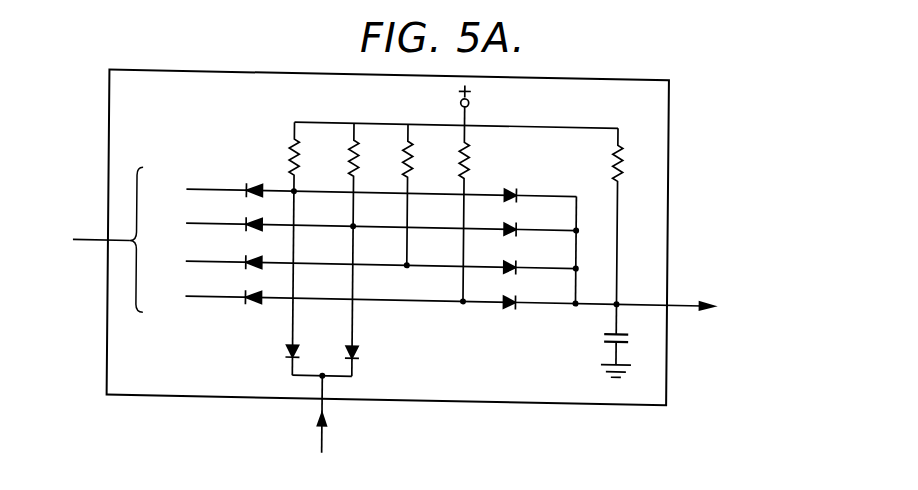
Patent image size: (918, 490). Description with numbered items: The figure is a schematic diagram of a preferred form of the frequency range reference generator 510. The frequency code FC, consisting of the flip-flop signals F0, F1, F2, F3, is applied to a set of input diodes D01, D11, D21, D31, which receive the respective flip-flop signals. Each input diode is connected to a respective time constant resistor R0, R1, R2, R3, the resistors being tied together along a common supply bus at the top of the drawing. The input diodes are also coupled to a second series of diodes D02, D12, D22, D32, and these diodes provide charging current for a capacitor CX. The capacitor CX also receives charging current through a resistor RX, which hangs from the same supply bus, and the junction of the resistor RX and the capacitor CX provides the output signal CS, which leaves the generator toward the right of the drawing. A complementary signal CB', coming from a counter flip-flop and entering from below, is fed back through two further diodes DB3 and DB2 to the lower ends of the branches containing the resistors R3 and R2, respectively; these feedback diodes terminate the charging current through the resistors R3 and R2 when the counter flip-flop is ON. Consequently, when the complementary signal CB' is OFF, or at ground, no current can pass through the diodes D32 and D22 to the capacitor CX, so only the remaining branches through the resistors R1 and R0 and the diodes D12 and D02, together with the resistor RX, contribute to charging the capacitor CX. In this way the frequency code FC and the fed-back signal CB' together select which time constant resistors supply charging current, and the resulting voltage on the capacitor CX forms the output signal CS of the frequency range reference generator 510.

The frequency range reference generator 510 is at (582, 75).
The time constant resistor R3 is at (310, 157).
The time constant resistor R2 is at (367, 175).
The time constant resistor R1 is at (422, 195).
The time constant resistor R0 is at (479, 213).
The resistor RX is at (633, 216).
The flip-flop signal F3 is at (365, 192).
The flip-flop signal F2 is at (364, 226).
The flip-flop signal F1 is at (365, 264).
The flip-flop signal F0 is at (383, 299).
The frequency code FC is at (91, 238).
The input diode D31 is at (245, 188).
The input diode D21 is at (245, 222).
The input diode D11 is at (245, 260).
The input diode D01 is at (245, 295).
The diode D32 is at (517, 190).
The diode D22 is at (517, 224).
The diode D12 is at (517, 262).
The diode D02 is at (517, 297).
The diode DB3 is at (284, 351).
The diode DB2 is at (357, 354).
The complementary signal CB' is at (339, 415).
The output signal CS is at (665, 296).
The capacitor CX is at (628, 341).